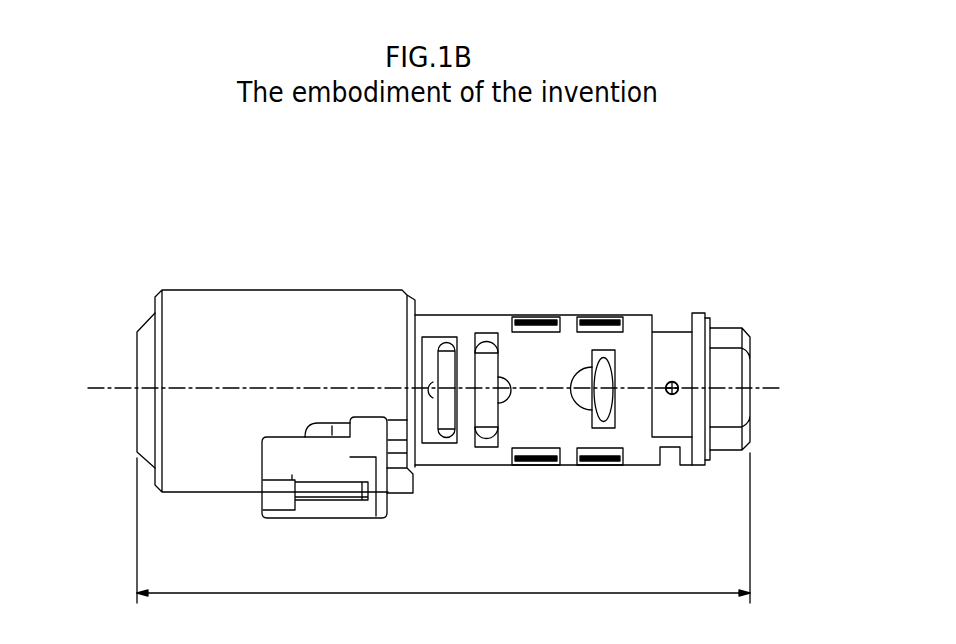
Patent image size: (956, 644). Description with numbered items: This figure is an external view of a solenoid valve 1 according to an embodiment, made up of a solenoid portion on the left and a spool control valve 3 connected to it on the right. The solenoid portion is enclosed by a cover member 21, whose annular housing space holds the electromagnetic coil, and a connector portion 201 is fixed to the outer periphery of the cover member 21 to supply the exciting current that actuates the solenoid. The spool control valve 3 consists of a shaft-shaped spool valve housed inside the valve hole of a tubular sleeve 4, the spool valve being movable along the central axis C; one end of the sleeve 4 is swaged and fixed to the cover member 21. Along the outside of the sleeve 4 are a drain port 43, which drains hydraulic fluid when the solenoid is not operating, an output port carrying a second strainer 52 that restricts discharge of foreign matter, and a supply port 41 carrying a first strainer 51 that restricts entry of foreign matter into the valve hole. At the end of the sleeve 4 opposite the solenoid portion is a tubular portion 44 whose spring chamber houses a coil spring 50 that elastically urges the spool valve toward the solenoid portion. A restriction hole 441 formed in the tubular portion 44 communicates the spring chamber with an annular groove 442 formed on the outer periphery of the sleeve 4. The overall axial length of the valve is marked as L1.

The solenoid valve 1 is at (180, 222).
The cover member 21 is at (157, 288).
The connector portion 201 is at (313, 508).
The spool control valve 3 is at (553, 394).
The drain port 43 is at (482, 327).
The second strainer 52 is at (537, 317).
The first strainer 51 is at (593, 317).
The supply port 41 is at (610, 345).
The sleeve 4 is at (734, 380).
The annular groove 442 is at (673, 325).
The tubular portion 44 is at (753, 452).
The coil spring 50 is at (677, 384).
The restriction hole 441 is at (678, 403).
The central axis C is at (780, 388).
The overall length L1 is at (443, 528).